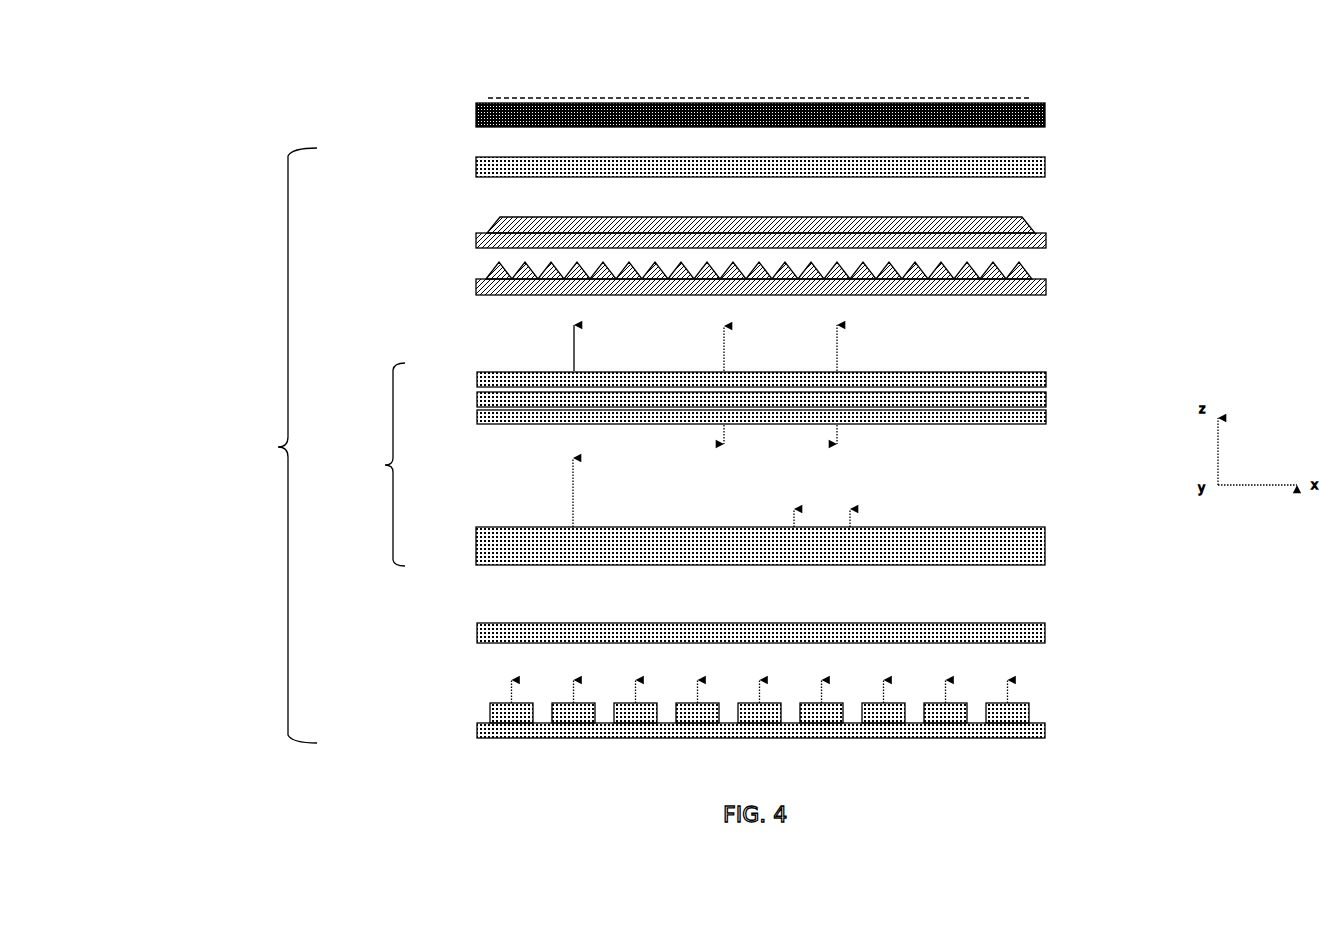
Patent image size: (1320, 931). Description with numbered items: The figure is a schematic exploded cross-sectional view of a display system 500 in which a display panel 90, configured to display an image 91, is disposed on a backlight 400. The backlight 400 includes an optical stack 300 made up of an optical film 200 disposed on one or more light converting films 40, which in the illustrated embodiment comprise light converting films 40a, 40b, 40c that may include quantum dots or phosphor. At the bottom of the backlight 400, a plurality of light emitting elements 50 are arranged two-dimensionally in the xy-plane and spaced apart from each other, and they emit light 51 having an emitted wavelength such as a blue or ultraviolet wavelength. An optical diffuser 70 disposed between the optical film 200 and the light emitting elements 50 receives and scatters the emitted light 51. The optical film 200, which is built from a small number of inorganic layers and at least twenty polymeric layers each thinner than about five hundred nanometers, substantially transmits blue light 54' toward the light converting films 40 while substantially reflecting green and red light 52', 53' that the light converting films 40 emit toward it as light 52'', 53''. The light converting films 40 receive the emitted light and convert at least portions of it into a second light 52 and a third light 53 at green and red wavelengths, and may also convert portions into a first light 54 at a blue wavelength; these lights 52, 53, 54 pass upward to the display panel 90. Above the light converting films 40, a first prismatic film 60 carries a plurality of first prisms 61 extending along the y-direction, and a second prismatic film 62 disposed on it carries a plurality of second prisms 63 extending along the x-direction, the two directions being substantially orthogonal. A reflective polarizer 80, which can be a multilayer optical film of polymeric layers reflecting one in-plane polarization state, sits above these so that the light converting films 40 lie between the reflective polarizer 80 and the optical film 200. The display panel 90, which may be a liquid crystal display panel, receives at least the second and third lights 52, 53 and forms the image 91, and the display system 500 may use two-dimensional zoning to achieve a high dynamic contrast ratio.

The display system 500 is at (256, 91).
The backlight 400 is at (278, 446).
The optical stack 300 is at (385, 465).
The optical film 200 is at (1045, 545).
The image 91 is at (505, 97).
The display panel 90 is at (1045, 110).
The reflective polarizer 80 is at (1040, 167).
The optical diffuser 70 is at (1045, 633).
The second prisms 63 is at (497, 222).
The second prismatic film 62 is at (488, 237).
The first prisms 61 is at (1028, 273).
The first prismatic film 60 is at (1046, 287).
The first light 54 is at (542, 345).
The blue light 54' is at (540, 491).
The third light 53 is at (808, 348).
The red light 53' is at (880, 509).
The emitted red light 53'' is at (806, 441).
The second light 52 is at (696, 344).
The green light 52' is at (766, 511).
The emitted green light 52'' is at (693, 443).
The emitted light 51 is at (510, 689).
The light emitting elements 50 is at (500, 713).
The light converting films 40 is at (769, 402).
The light converting film 40a is at (480, 380).
The light converting film 40b is at (480, 397).
The light converting film 40c is at (480, 415).